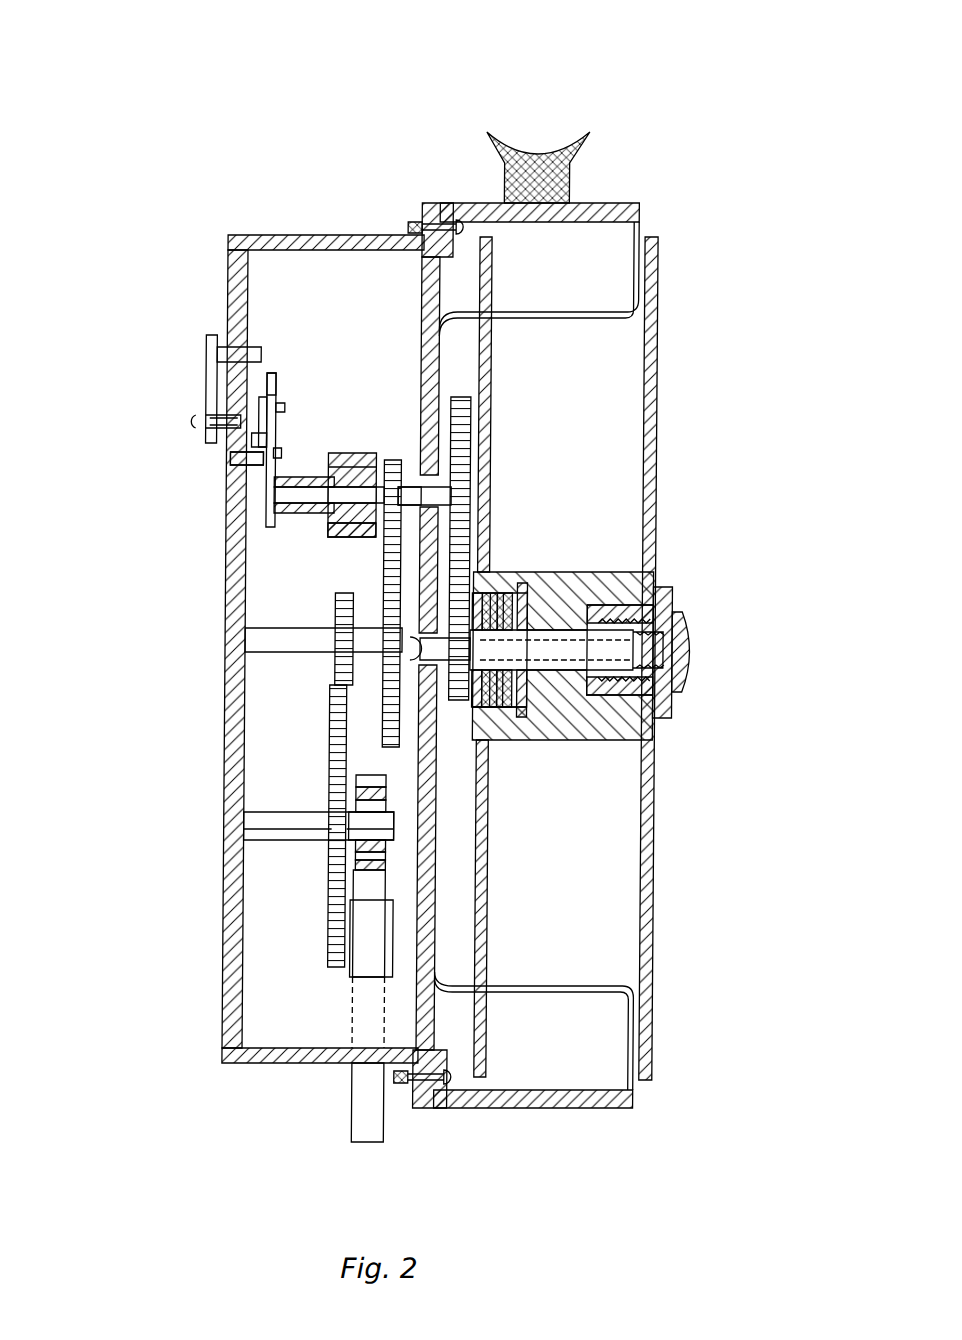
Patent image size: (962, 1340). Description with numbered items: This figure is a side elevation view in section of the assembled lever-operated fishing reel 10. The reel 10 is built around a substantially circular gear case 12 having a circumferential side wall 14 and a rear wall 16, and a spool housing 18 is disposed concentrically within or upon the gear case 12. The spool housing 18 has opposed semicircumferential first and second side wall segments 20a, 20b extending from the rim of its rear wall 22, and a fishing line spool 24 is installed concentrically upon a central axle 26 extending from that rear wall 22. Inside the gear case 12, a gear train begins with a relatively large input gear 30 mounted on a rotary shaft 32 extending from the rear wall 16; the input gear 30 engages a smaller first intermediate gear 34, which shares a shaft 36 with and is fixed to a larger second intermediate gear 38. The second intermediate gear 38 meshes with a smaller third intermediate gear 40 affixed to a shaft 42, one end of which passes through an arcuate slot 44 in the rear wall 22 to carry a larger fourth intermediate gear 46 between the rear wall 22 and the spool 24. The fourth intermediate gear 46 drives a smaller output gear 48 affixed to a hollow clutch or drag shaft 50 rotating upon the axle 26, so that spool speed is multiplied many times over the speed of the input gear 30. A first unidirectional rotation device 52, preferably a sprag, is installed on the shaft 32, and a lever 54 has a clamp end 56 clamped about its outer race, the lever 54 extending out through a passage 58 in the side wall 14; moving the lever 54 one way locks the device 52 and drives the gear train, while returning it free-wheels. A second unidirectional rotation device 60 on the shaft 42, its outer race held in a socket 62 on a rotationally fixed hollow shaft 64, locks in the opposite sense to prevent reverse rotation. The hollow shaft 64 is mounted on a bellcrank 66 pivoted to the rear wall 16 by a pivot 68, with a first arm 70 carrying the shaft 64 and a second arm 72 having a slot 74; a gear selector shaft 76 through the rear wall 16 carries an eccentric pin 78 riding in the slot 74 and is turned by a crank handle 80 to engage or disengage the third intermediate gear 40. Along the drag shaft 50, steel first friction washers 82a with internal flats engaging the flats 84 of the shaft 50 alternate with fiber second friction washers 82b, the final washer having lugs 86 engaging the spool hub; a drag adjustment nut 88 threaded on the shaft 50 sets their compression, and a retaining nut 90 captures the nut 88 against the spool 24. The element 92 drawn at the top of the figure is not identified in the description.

The lever-operated fishing reel 10 is at (148, 68).
The gear case 12 is at (232, 1060).
The circumferential side wall 14 is at (305, 235).
The rear wall 16 is at (225, 722).
The spool housing 18 is at (640, 206).
The first side wall segment 20a is at (582, 286).
The second side wall segment 20b is at (588, 1071).
The rear wall of spool housing 22 is at (424, 332).
The fishing line spool 24 is at (656, 380).
The central axle 26 is at (444, 664).
The first or input gear 30 is at (330, 738).
The rotary shaft 32 is at (290, 812).
The first intermediate gear 34 is at (335, 600).
The shaft 36 is at (288, 654).
The second intermediate gear 38 is at (378, 555).
The third intermediate gear 40 is at (385, 460).
The shaft 42 is at (410, 486).
The arcuate slot 44 is at (446, 487).
The fourth intermediate gear 46 is at (458, 397).
The final or output gear 48 is at (478, 742).
The clutch or drag shaft 50 is at (570, 605).
The first unidirectional rotation device 52 is at (390, 800).
The lever 54 is at (355, 1100).
The clamp end 56 is at (380, 778).
The passage 58 is at (388, 904).
The second unidirectional rotation device 60 is at (345, 540).
The socket 62 is at (340, 454).
The hollow shaft 64 is at (294, 477).
The bellcrank 66 is at (262, 490).
The pivot 68 is at (246, 460).
The first arm 70 is at (262, 540).
The second arm 72 is at (268, 372).
The slot 74 is at (275, 395).
The gear selector shaft 76 is at (192, 421).
The eccentric pin 78 is at (283, 408).
The crank handle 80 is at (207, 335).
The first friction washers 82a is at (480, 592).
The second friction washers 82b is at (485, 708).
The flats 84 is at (524, 583).
The ears or lugs 86 is at (504, 592).
The drag adjustment nut 88 is at (672, 592).
The retaining nut 90 is at (696, 650).
The nozzle 92 is at (487, 131).